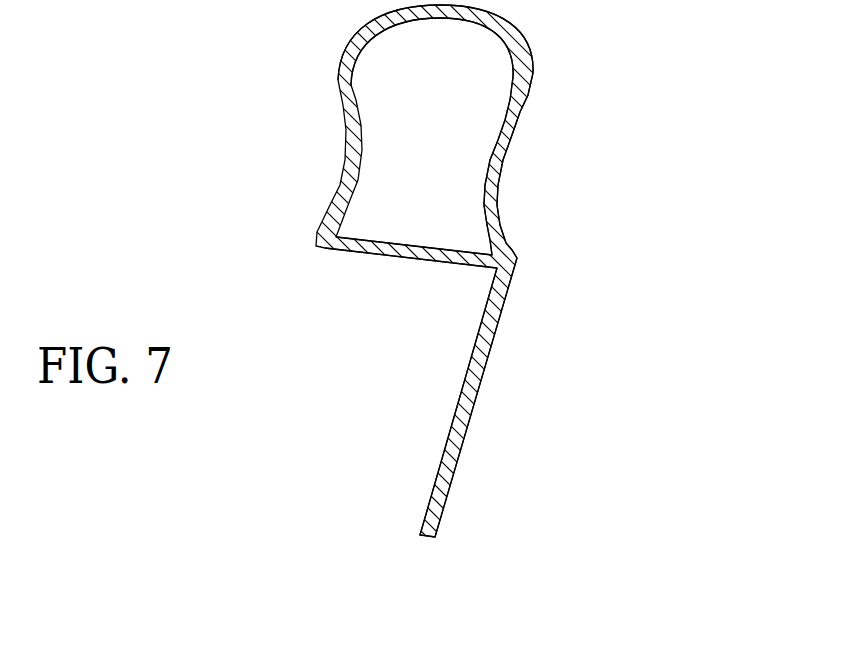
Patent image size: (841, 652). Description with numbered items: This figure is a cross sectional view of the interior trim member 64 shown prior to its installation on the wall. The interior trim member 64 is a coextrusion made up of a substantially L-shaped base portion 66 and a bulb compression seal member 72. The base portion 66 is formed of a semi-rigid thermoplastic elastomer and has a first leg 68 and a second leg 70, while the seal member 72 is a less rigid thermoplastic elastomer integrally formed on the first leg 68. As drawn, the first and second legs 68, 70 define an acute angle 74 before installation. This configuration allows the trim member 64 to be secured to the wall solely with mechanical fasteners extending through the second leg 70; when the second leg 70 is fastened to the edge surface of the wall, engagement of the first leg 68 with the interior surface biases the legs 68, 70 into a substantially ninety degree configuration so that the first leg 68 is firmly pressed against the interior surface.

The interior trim member 64 is at (632, 462).
The base portion 66 is at (508, 313).
The first leg 68 is at (358, 258).
The second leg 70 is at (440, 472).
The seal member 72 is at (345, 93).
The acute angle 74 is at (423, 272).